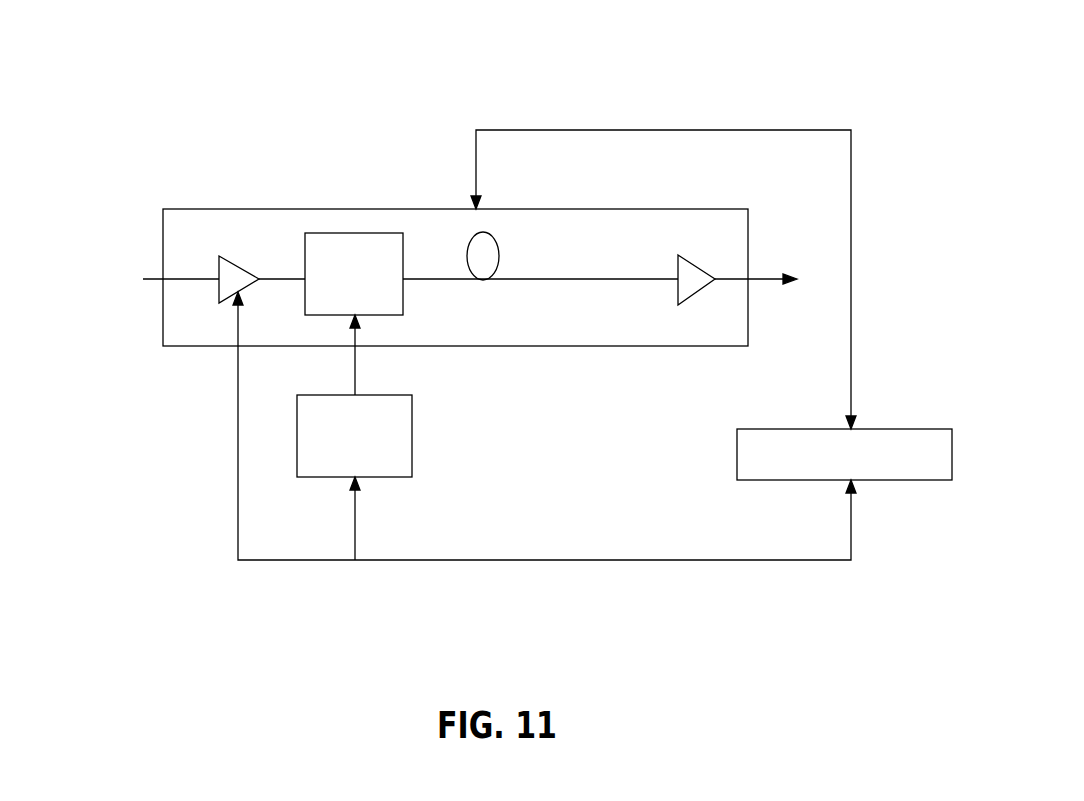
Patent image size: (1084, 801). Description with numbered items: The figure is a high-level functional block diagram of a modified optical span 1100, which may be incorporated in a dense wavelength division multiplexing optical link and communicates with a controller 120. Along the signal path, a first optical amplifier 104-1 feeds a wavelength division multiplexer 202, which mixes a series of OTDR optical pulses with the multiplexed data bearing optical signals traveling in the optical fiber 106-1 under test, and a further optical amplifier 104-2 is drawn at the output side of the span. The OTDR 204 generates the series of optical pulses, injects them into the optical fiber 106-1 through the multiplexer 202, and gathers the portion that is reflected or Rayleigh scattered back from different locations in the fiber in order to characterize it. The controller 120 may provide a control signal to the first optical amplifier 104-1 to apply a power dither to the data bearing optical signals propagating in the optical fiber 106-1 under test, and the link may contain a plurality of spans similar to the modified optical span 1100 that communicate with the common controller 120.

The modified optical span 1100 is at (116, 46).
The optical amplifier 104-1 is at (206, 268).
The optical amplifier 104-2 is at (704, 259).
The optical fiber 106-1 is at (512, 240).
The wavelength division multiplexer 202 is at (331, 301).
The OTDR 204 is at (330, 467).
The controller 120 is at (929, 469).